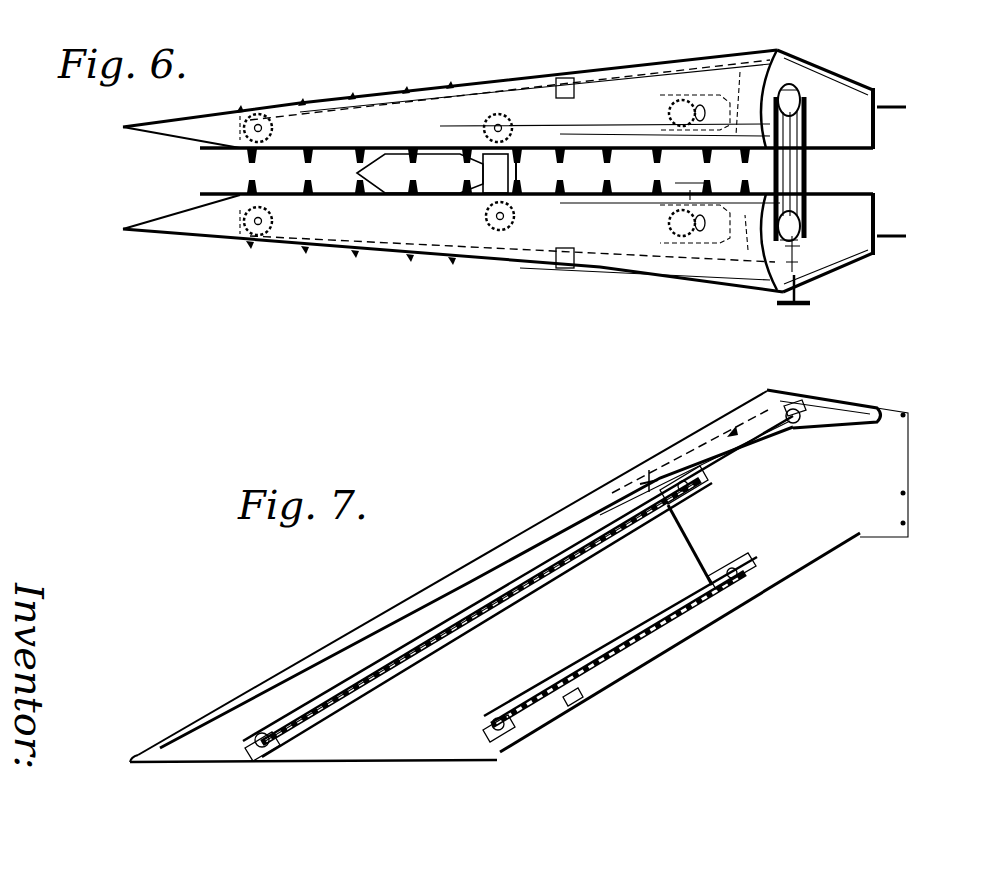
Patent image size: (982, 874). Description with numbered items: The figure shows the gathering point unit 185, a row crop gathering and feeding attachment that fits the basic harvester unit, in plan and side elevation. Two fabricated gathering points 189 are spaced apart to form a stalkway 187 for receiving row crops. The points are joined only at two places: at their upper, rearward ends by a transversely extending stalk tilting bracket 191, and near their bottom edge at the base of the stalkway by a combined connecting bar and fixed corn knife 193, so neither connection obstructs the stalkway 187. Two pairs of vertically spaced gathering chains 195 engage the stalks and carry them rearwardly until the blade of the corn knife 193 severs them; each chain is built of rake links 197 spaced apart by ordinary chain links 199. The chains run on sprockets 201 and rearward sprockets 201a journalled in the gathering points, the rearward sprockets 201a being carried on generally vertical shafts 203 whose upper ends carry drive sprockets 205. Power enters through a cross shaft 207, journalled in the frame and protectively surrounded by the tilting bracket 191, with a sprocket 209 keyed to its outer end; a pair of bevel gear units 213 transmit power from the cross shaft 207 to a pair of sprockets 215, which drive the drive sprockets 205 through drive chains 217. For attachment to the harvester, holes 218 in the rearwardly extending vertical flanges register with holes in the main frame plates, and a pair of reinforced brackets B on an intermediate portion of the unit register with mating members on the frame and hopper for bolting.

In FIG. 6, the gathering point unit 185 is at (462, 291).
In FIG. 7, the gathering point unit 185 is at (540, 506).
In FIG. 6, the stalkway 187 is at (225, 177).
In FIG. 6, the gathering points 189 is at (437, 86).
In FIG. 7, the gathering points 189 is at (447, 578).
In FIG. 6, the stalk tilting bracket 191 is at (808, 180).
In FIG. 6, the combined connecting bar and fixed corn knife 193 is at (510, 178).
In FIG. 7, the gathering chains 195 is at (657, 614).
In FIG. 6, the rake links 197 is at (357, 163).
In FIG. 7, the rake links 197 is at (560, 576).
In FIG. 7, the chain links 199 is at (580, 663).
In FIG. 6, the sprockets 201 is at (264, 110).
In FIG. 7, the sprockets 201 is at (278, 745).
In FIG. 6, the rearward sprockets 201a is at (697, 70).
In FIG. 7, the rearward sprockets 201a is at (670, 512).
In FIG. 6, the vertically extending shafts 203 is at (693, 200).
In FIG. 7, the vertically extending shafts 203 is at (678, 542).
In FIG. 7, the drive sprockets 205 is at (648, 474).
In FIG. 6, the cross shaft 207 is at (806, 165).
In FIG. 7, the cross shaft 207 is at (824, 404).
In FIG. 6, the sprocket 209 is at (790, 305).
In FIG. 6, the bevel gear units 213 is at (796, 84).
In FIG. 7, the bevel gear units 213 is at (800, 402).
In FIG. 6, the sprockets 215 is at (796, 254).
In FIG. 7, the sprockets 215 is at (789, 396).
In FIG. 6, the drive chains 217 is at (741, 90).
In FIG. 7, the drive chains 217 is at (727, 418).
In FIG. 7, the holes 218 is at (905, 415).
In FIG. 6, the reinforced brackets B is at (567, 78).
In FIG. 7, the reinforced brackets B is at (567, 704).